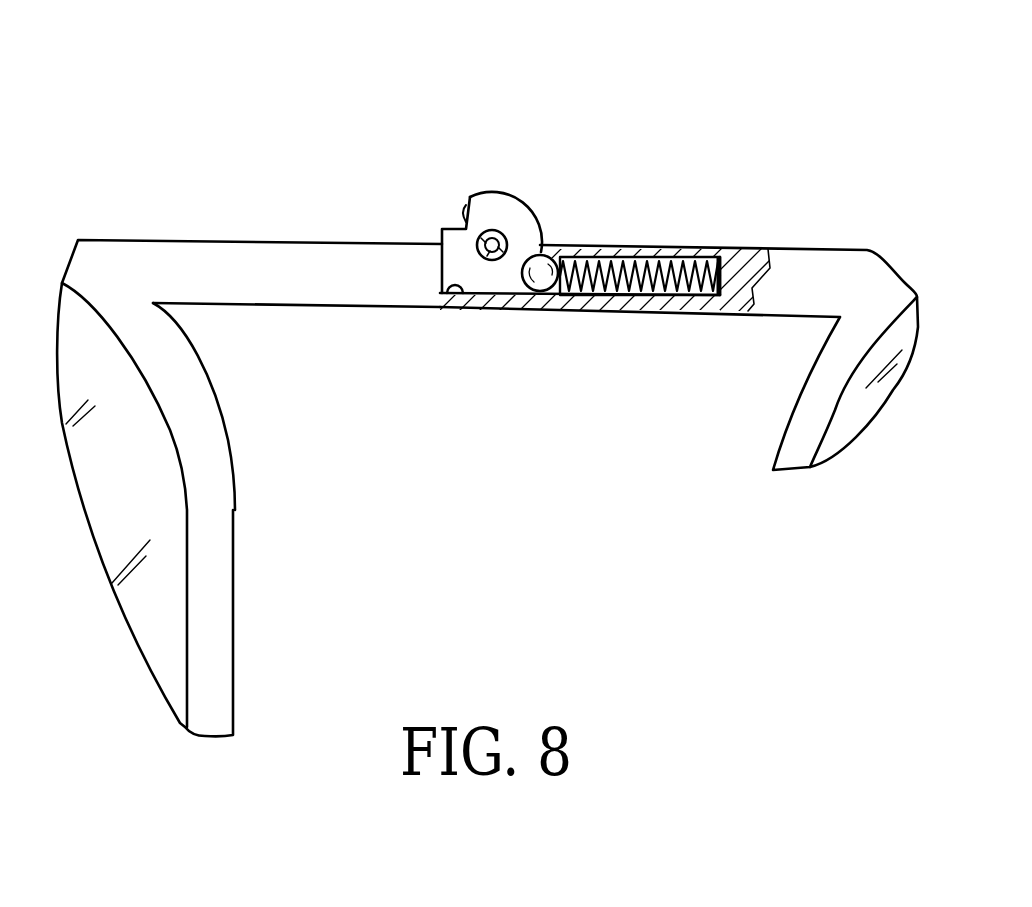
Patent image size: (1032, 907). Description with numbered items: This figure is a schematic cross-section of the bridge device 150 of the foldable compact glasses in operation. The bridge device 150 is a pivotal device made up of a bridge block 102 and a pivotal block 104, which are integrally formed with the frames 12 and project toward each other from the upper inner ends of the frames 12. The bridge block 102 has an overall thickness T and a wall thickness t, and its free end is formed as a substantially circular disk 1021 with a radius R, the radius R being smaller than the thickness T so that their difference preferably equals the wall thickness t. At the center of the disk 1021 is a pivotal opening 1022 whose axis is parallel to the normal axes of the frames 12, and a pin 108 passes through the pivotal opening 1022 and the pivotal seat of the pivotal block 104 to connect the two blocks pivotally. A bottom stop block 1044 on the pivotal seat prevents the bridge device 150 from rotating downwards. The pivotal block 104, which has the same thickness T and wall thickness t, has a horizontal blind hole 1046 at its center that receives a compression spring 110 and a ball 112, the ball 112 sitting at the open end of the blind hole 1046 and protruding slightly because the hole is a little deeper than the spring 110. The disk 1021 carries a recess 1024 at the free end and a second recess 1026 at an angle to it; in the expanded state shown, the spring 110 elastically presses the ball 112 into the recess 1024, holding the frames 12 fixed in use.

The bridge device 150 is at (529, 118).
The bridge block 102 is at (223, 257).
The pivotal block 104 is at (820, 267).
The frame 12 is at (207, 417).
The pivotal opening 1022 is at (502, 287).
The recess 1026 is at (460, 223).
The circular disk 1021 is at (510, 210).
The pin 108 is at (485, 262).
The bottom stop block 1044 is at (455, 296).
The ball 112 is at (540, 257).
The recess 1024 is at (513, 293).
The compression spring 110 is at (663, 294).
The blind hole 1046 is at (712, 262).
The overall thickness T is at (334, 310).
The wall thickness t is at (440, 294).
The radius R is at (533, 291).